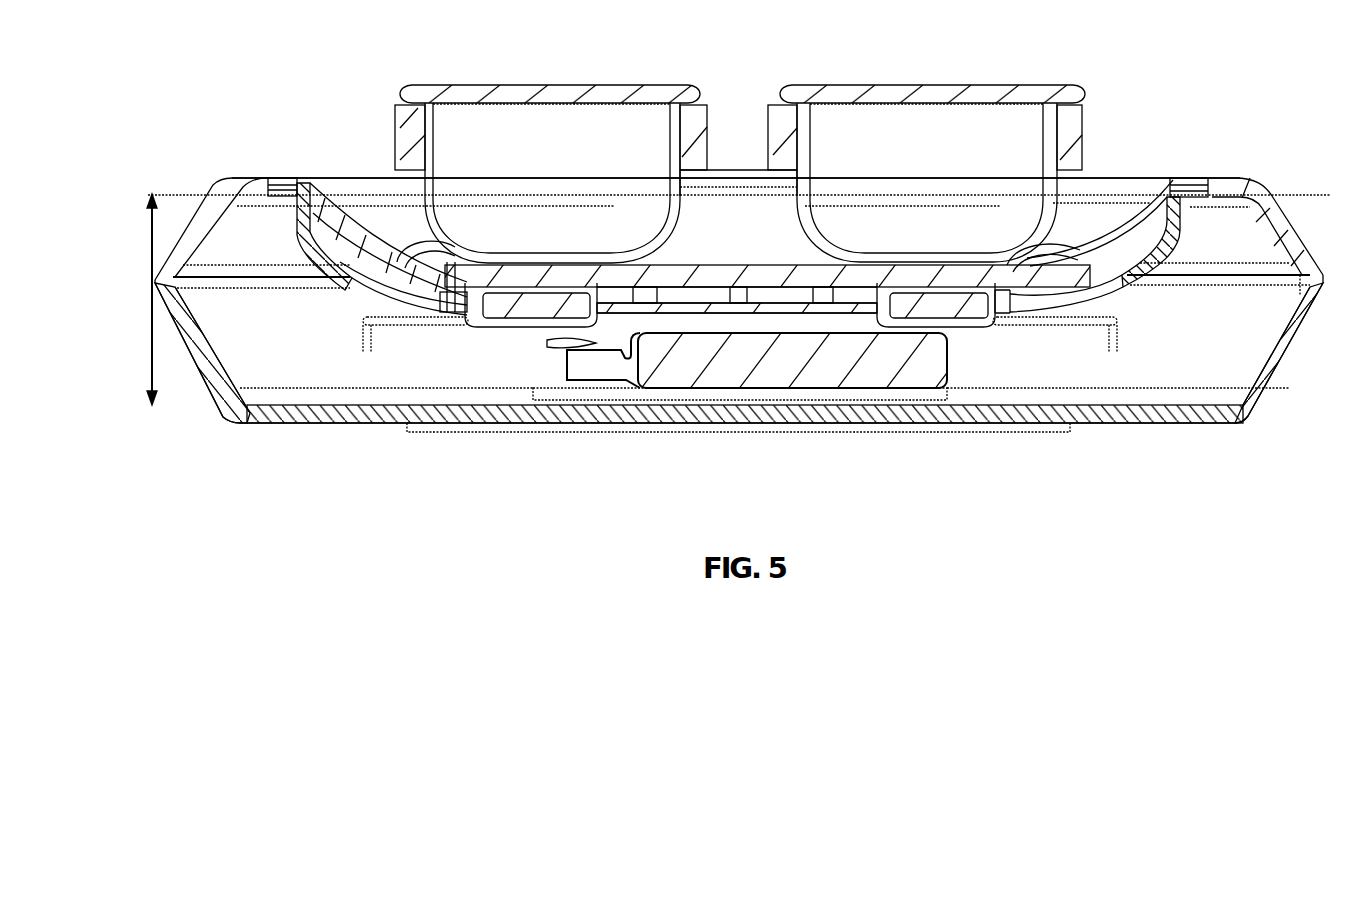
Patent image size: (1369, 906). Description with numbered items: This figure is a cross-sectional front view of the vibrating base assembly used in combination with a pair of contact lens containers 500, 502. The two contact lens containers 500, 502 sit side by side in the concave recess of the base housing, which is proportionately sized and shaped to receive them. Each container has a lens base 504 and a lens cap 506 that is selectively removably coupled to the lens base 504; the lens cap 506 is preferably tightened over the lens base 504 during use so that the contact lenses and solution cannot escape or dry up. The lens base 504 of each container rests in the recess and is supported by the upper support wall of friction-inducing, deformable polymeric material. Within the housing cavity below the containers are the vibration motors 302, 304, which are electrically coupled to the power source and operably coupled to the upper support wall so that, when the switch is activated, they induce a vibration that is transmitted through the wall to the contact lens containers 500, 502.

The contact lens container 500 is at (412, 140).
The contact lens container 502 is at (798, 97).
The lens base 504 is at (393, 177).
The lens cap 506 is at (467, 92).
The vibration motor 302 is at (530, 300).
The vibration motor 304 is at (967, 310).